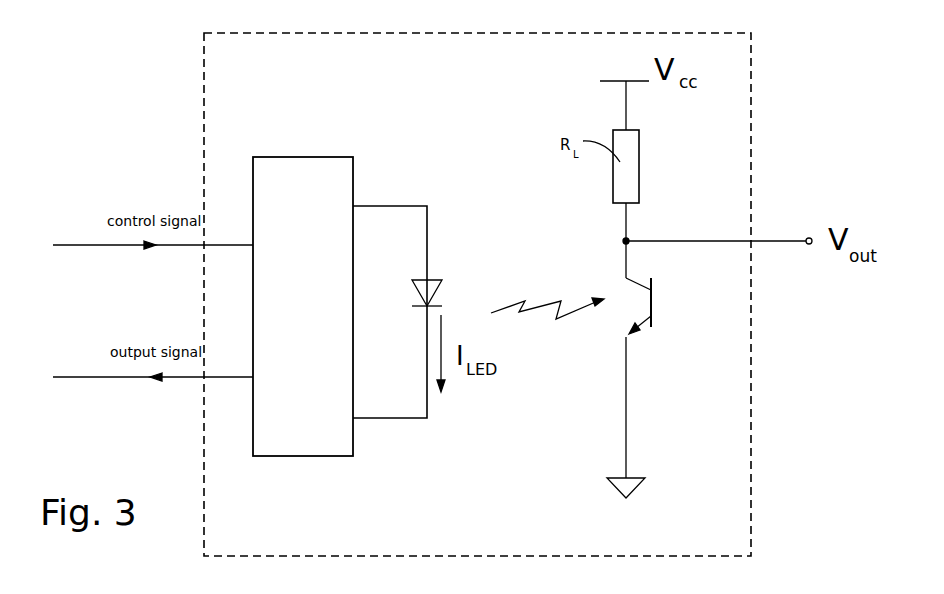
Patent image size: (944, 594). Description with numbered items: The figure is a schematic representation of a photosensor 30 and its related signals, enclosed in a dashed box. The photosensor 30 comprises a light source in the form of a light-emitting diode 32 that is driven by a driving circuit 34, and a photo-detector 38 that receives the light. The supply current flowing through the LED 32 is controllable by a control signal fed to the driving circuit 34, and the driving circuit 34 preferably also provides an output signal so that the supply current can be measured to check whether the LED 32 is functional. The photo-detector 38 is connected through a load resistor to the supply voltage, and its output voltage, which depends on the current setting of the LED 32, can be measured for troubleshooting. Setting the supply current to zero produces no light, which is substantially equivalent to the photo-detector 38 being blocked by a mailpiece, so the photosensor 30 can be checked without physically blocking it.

The photosensor 30 is at (190, 47).
The light-emitting diode 32 is at (440, 272).
The driving circuit 34 is at (328, 448).
The photo-detector 38 is at (657, 305).